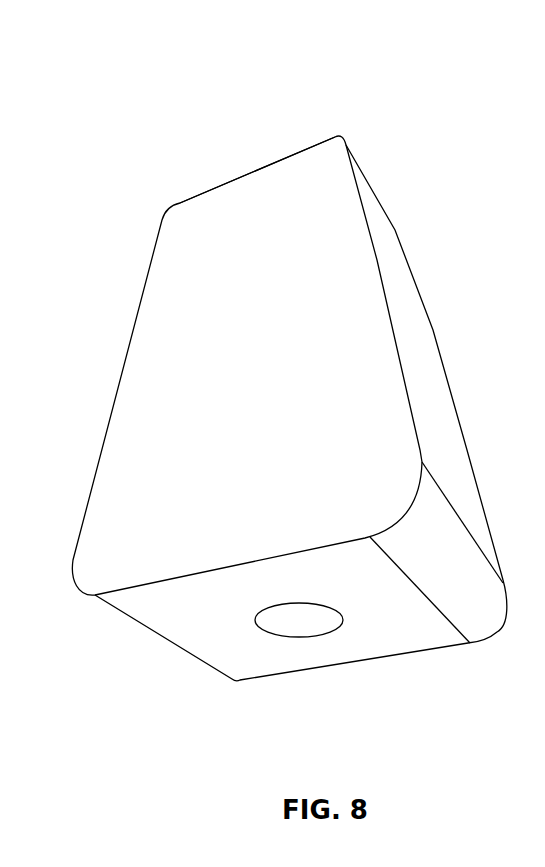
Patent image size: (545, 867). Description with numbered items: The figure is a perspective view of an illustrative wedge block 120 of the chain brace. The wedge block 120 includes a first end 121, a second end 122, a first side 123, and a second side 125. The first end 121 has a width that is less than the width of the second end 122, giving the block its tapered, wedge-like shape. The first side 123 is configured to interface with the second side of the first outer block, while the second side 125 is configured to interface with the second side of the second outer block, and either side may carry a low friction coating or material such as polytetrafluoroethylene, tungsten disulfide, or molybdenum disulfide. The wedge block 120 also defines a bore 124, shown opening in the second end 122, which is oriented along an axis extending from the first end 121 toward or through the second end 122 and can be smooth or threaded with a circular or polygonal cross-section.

The wedge block 120 is at (213, 57).
The first end 121 is at (253, 173).
The second end 122 is at (410, 638).
The first side 123 is at (427, 338).
The bore 124 is at (303, 633).
The second side 125 is at (102, 406).